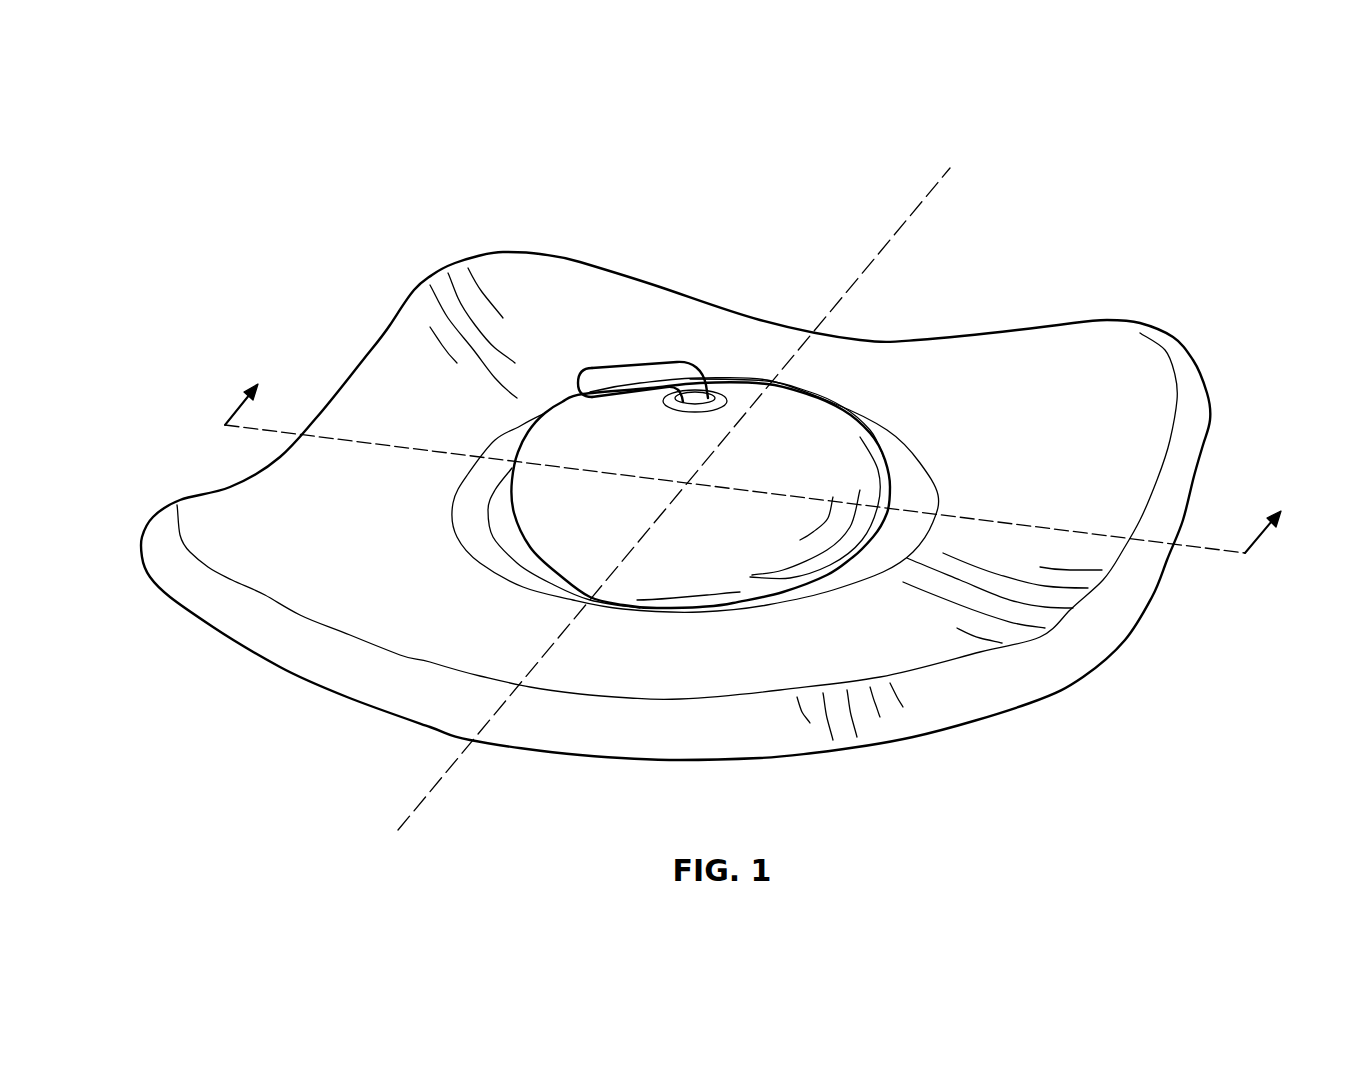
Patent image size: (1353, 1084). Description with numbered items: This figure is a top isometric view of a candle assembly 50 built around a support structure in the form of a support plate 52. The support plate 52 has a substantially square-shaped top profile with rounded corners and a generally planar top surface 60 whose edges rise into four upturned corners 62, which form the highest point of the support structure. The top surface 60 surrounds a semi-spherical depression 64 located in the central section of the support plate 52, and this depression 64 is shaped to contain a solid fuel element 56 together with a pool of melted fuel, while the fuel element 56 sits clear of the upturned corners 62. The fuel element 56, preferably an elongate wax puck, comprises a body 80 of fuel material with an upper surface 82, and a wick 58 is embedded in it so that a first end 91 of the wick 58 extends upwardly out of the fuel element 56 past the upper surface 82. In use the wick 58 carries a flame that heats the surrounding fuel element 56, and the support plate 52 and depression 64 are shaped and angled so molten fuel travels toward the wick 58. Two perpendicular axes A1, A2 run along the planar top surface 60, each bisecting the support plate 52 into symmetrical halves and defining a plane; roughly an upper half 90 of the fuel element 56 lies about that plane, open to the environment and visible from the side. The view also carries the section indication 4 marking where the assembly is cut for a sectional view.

The candle assembly 50 is at (365, 98).
The support plate 52 is at (1187, 477).
The fuel element 56 is at (773, 427).
The wick 58 is at (667, 370).
The top surface 60 is at (1090, 342).
The upturned corners 62 is at (487, 267).
The depression 64 is at (910, 457).
The body 80 is at (727, 572).
The upper surface 82 is at (733, 413).
The upper half 90 is at (830, 440).
The first end 91 is at (587, 367).
The axis A1 is at (1237, 553).
The axis A2 is at (437, 782).
The section line 4- 4 is at (762, 458).